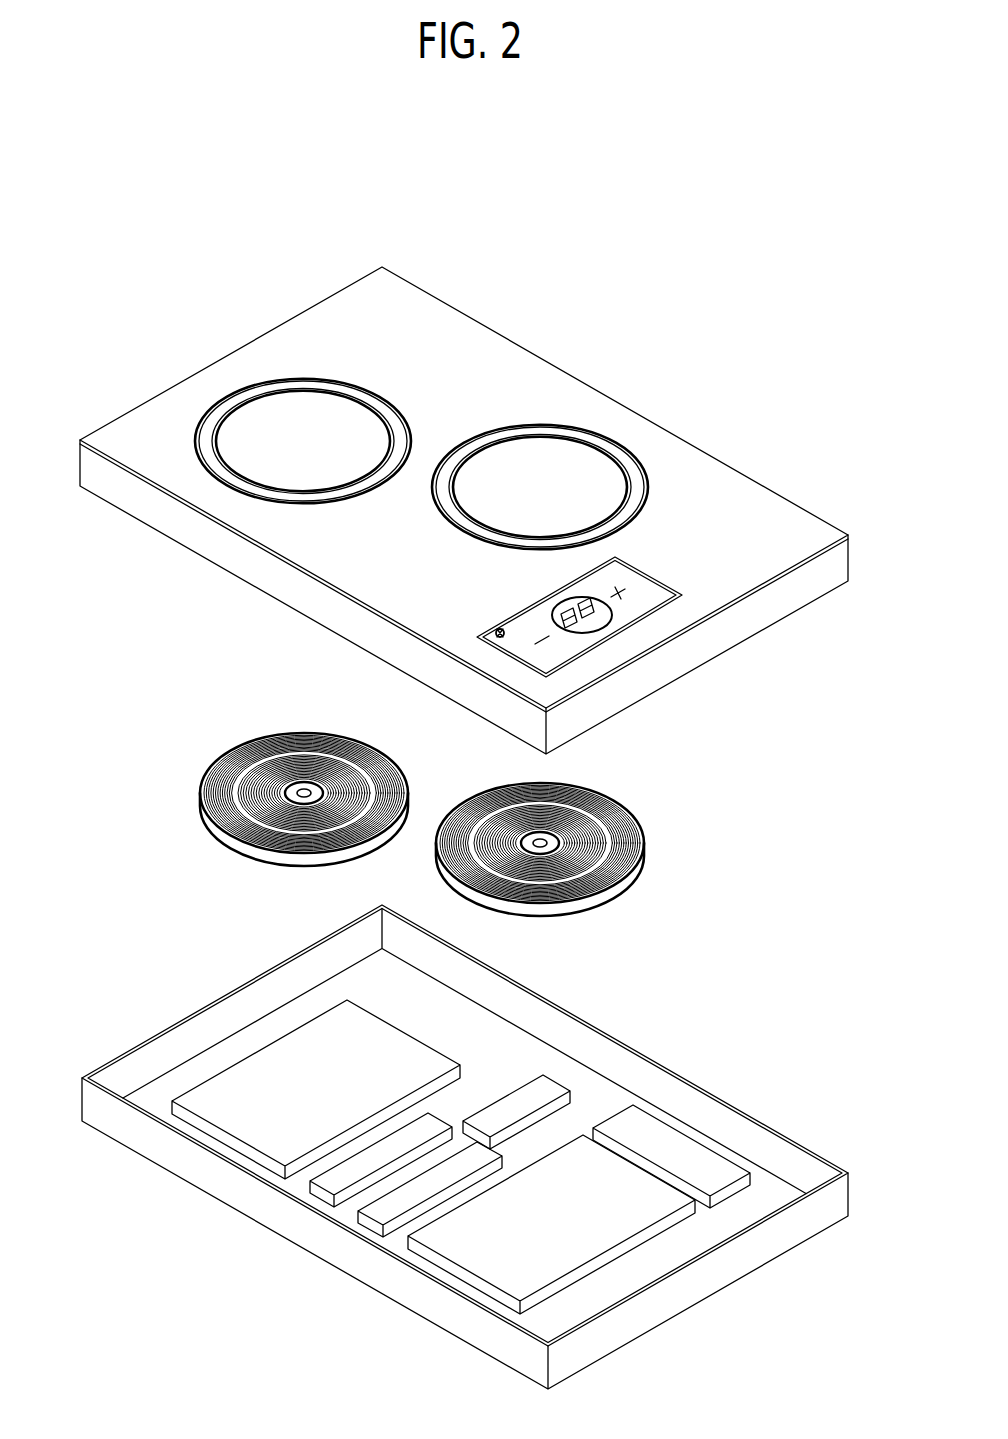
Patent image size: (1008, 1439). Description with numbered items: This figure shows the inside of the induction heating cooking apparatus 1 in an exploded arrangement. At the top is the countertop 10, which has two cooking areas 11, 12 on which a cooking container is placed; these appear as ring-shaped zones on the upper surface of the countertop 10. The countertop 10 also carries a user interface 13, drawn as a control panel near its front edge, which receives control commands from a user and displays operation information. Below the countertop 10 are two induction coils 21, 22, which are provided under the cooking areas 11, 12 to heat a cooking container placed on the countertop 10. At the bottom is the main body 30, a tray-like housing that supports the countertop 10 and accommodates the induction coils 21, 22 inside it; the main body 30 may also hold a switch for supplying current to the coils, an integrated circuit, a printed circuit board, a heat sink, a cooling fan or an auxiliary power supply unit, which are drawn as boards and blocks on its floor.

The induction heating cooking apparatus 1 is at (675, 250).
The countertop 10 is at (770, 512).
The cooking area 11 is at (368, 390).
The cooking area 12 is at (615, 443).
The user interface 13 is at (653, 617).
The induction coil 21 is at (218, 758).
The induction coil 22 is at (638, 877).
The main body 30 is at (742, 1110).